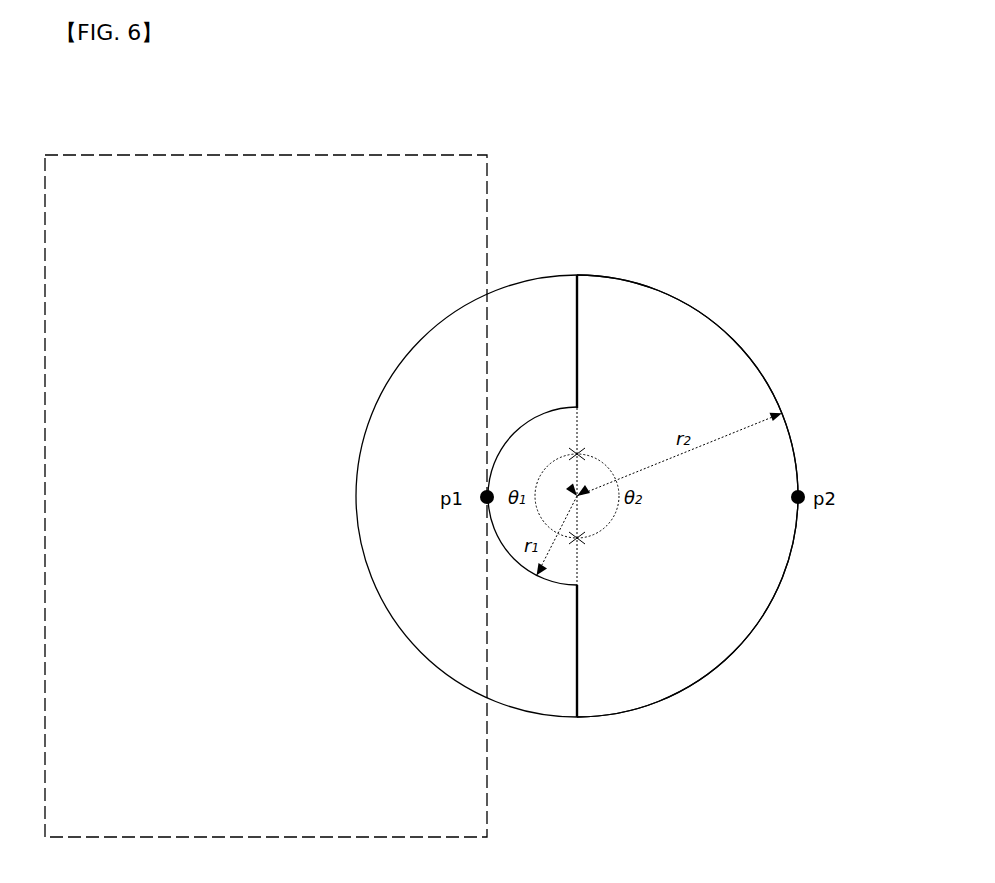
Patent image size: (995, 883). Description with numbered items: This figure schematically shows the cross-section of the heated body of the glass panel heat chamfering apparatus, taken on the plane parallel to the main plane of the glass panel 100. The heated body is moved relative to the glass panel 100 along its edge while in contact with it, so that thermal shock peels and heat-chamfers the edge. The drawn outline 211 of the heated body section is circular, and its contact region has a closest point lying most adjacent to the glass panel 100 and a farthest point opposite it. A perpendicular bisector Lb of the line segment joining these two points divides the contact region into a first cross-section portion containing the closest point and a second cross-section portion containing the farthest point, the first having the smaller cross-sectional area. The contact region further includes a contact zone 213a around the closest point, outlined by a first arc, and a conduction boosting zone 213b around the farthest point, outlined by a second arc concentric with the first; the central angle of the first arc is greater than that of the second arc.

The glass panel 100 is at (307, 178).
The lens 211 is at (522, 688).
The contact zone 213a is at (552, 440).
The conduction boosting zone 213b is at (685, 628).
The perpendicular bisector Lb is at (577, 452).